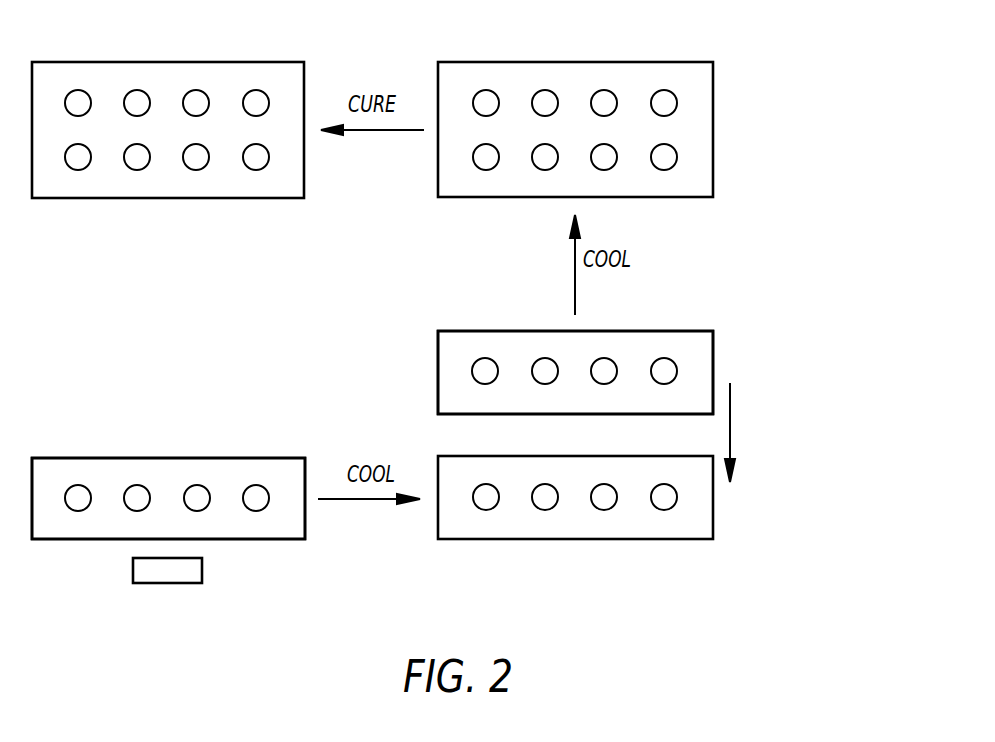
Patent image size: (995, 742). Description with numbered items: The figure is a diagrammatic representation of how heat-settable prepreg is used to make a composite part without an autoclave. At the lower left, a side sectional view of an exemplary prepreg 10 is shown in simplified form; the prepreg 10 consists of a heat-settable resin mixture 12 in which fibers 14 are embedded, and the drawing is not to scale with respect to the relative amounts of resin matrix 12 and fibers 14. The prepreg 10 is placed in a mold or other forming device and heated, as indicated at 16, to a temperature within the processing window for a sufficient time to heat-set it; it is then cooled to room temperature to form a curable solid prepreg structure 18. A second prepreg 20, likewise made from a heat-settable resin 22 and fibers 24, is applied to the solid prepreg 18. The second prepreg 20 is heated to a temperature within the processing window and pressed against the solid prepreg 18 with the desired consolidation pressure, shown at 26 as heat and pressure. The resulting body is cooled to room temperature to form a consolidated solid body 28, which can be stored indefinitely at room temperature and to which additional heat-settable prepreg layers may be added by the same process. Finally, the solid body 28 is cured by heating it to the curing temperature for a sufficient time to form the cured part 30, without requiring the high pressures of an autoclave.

The prepreg 10 is at (45, 458).
The heat-settable resin mixture 12 is at (293, 472).
The fibers 14 is at (137, 489).
The heating 16 is at (167, 585).
The curable solid prepreg structure 18 is at (579, 539).
The second prepreg 20 is at (715, 348).
The heat-settable resin 22 is at (438, 347).
The fibers 24 is at (545, 362).
The heat and consolidation pressure 26 is at (835, 390).
The consolidated solid body 28 is at (637, 62).
The cured part 30 is at (215, 62).